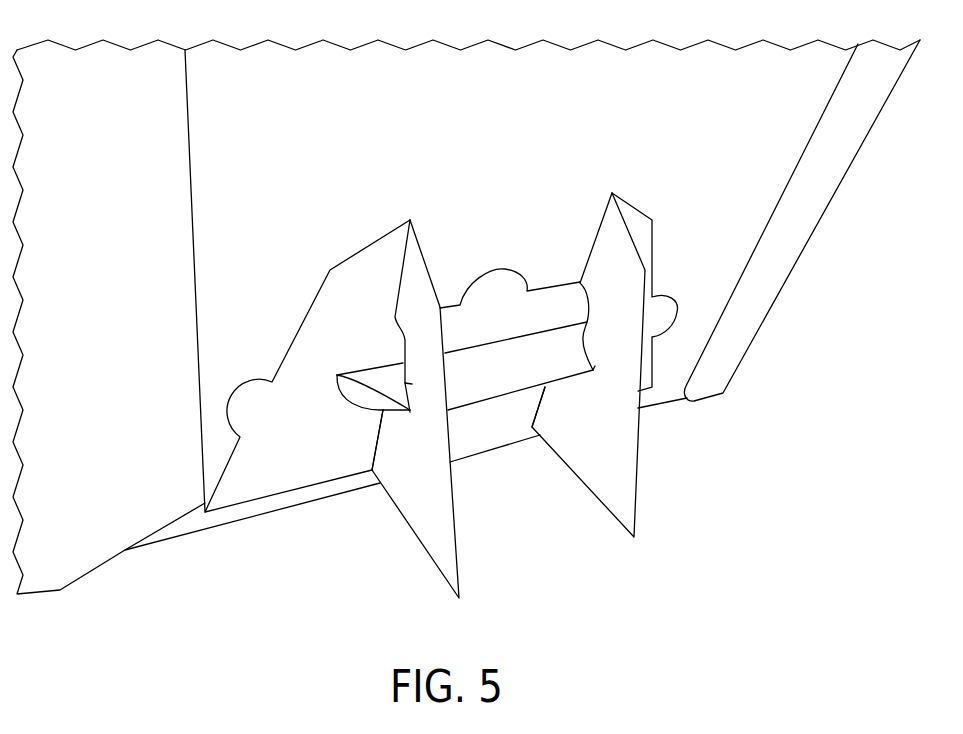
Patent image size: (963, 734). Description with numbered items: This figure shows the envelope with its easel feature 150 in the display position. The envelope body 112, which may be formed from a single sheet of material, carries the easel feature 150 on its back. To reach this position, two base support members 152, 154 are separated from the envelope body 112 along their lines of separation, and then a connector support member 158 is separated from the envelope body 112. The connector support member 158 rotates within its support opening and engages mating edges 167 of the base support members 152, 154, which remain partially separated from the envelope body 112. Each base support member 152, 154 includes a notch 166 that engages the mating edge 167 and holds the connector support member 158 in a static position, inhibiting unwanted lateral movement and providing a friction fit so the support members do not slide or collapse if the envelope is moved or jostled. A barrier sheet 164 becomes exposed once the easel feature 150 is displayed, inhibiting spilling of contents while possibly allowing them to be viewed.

The envelope body 112 is at (480, 63).
The easel feature 150 is at (671, 205).
The base support member 152 is at (427, 261).
The base support member 154 is at (600, 243).
The connector support member 158 is at (541, 357).
The barrier sheet 164 is at (322, 291).
The notch 166 is at (407, 400).
The mating edge 167 is at (405, 383).